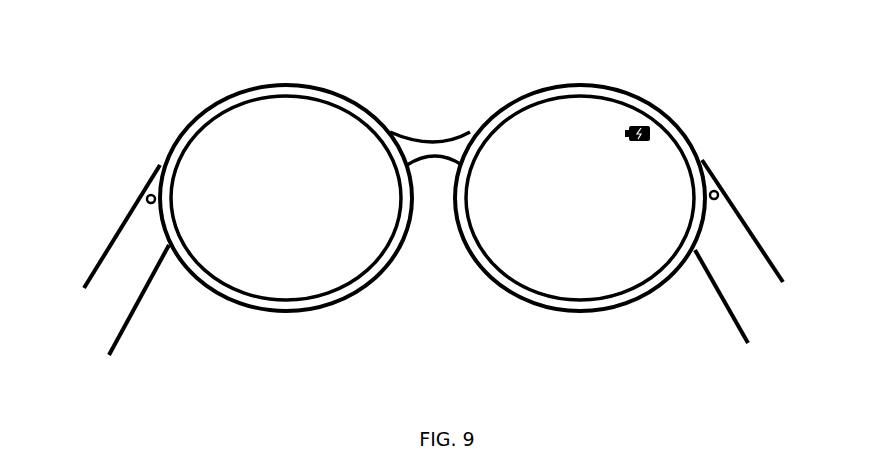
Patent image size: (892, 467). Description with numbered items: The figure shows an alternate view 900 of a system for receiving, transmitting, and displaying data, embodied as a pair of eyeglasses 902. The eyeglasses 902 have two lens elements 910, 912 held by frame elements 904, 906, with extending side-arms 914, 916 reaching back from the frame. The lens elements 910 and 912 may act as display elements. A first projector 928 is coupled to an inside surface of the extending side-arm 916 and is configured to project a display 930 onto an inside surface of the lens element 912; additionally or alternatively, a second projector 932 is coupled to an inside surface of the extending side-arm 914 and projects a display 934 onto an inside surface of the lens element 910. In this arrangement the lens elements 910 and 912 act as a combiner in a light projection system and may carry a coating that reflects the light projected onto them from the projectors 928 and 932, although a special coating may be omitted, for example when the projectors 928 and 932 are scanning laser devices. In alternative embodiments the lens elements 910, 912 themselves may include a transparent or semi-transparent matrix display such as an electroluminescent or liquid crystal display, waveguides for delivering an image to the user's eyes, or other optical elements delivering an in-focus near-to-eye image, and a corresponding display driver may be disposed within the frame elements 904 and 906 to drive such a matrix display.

The alternate view 900 is at (670, 381).
The eyeglasses 902 is at (372, 74).
The frame element 904 is at (657, 290).
The frame element 906 is at (190, 277).
The lens element 910 is at (582, 283).
The lens element 912 is at (293, 287).
The extending side-arm 914 is at (740, 211).
The extending side-arm 916 is at (128, 215).
The first projector 928 is at (156, 193).
The display 930 is at (267, 128).
The second projector 932 is at (716, 191).
The display 934 is at (643, 143).